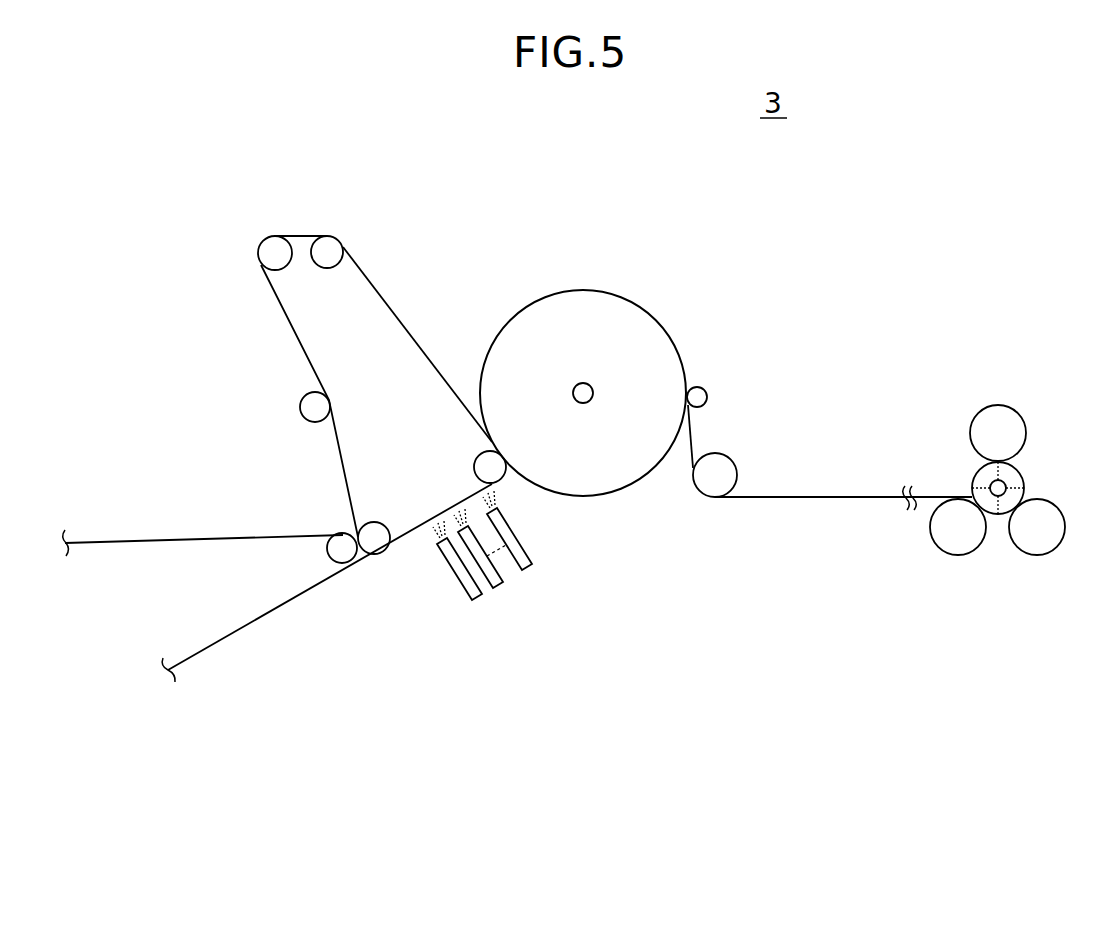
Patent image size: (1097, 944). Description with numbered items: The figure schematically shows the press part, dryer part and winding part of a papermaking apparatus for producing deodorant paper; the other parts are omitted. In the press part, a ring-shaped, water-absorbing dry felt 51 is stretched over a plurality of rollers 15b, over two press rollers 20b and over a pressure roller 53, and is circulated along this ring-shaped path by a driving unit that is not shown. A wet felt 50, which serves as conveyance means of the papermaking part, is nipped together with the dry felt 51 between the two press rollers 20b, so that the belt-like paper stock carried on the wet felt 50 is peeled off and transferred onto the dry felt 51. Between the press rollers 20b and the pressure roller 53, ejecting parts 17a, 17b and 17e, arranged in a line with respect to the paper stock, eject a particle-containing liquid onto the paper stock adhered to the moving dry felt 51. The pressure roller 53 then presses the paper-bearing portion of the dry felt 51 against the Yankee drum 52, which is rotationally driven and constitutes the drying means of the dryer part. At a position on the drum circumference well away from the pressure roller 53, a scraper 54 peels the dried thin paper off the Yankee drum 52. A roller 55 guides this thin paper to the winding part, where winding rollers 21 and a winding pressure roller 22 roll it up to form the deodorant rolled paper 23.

The rollers 15b is at (270, 258).
The ejecting part 17a is at (462, 578).
The ejecting part 17b is at (503, 563).
The ejecting part 17e is at (510, 531).
The press rollers 20b is at (339, 560).
The winding rollers 21 is at (958, 556).
The winding pressure roller 22 is at (1000, 406).
The deodorant rolled paper 23 is at (1022, 482).
The wet felt 50 is at (184, 538).
The dry felt 51 is at (342, 464).
The Yankee drum 52 is at (623, 298).
The pressure roller 53 is at (474, 463).
The scraper 54 is at (707, 396).
The roller 55 is at (737, 472).